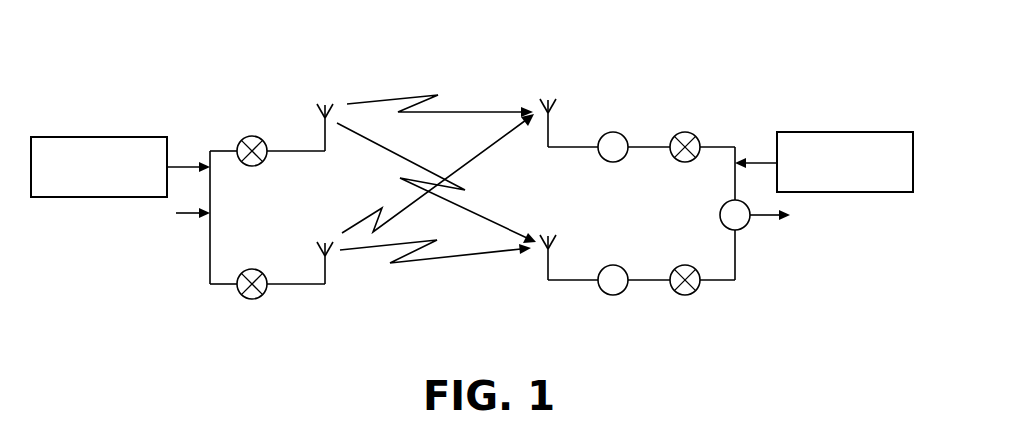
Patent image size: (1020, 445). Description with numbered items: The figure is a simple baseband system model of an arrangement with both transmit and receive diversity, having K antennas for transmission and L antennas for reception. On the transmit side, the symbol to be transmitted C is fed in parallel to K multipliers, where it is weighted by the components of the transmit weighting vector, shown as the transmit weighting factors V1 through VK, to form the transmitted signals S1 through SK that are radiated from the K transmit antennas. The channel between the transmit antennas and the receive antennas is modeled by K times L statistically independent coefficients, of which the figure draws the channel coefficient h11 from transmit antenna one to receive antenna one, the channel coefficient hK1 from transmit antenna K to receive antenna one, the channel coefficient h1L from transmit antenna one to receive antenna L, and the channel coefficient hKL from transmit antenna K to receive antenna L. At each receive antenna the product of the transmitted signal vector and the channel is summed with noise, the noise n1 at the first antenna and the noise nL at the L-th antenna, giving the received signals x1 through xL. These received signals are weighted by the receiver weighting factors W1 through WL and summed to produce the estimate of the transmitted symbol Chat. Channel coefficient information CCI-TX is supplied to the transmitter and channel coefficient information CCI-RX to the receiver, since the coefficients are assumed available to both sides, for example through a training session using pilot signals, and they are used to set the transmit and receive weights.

The channel coefficient information CCI-TX is at (120, 167).
The symbol to be transmitted C is at (179, 214).
The transmit weighting factor V1 is at (252, 175).
The transmit weighting factor VK is at (252, 308).
The transmitted signal S1 is at (300, 127).
The transmitted signal SK is at (300, 263).
The channel coefficient h11 is at (440, 102).
The channel coefficient hK1 is at (438, 173).
The channel coefficient h1L is at (436, 183).
The channel coefficient hKL is at (435, 260).
The received signal x1 is at (569, 123).
The received signal xL is at (569, 258).
The noise n1 is at (613, 171).
The noise nL is at (613, 304).
The receiver weighting factor W1 is at (685, 171).
The receiver weighting factor WL is at (685, 304).
The estimate of the transmitted symbol Chat is at (766, 215).
The channel coefficient information CCI-RX is at (824, 162).